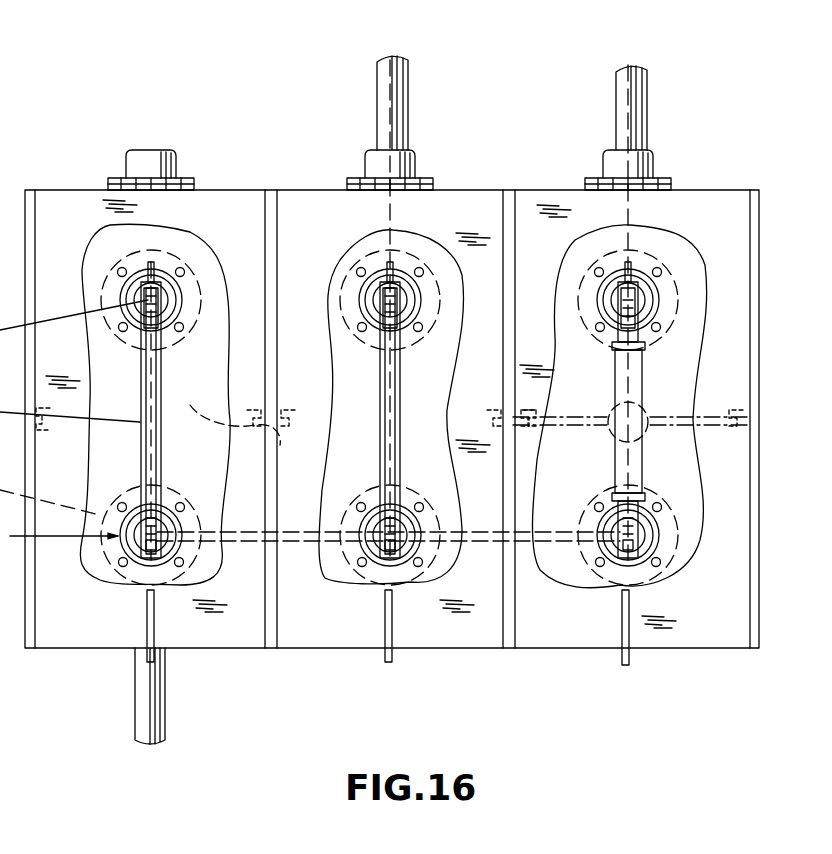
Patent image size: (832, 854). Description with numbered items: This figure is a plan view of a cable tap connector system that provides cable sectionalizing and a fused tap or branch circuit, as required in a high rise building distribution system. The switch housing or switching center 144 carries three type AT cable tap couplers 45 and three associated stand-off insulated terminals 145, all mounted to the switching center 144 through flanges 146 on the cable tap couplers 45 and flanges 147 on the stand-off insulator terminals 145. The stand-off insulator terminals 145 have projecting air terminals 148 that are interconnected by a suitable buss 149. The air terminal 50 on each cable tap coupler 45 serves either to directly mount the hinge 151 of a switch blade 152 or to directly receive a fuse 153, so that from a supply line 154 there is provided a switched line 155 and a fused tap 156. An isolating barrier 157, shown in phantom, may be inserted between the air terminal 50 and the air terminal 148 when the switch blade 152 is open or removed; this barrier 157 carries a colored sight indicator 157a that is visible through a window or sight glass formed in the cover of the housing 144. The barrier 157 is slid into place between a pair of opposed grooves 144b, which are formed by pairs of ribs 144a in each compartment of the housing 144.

The switching center 144 is at (281, 97).
The ribs 144a is at (235, 405).
The grooves 144b is at (272, 445).
The cable tap coupler 45 is at (183, 289).
The air terminal 50 is at (350, 290).
The stand-off insulated terminal 145 is at (425, 545).
The flanges 146 is at (175, 250).
The flanges 147 is at (415, 580).
The air terminals 148 is at (152, 552).
The buss 149 is at (330, 592).
The hinge 151 is at (148, 266).
The switch blade 152 is at (380, 420).
The fuse 153 is at (643, 470).
The supply line 154 is at (135, 718).
The switched line 155 is at (408, 76).
The fused tap 156 is at (648, 84).
The isolating barrier 157 is at (645, 420).
The colored sight indicator 157a is at (612, 425).